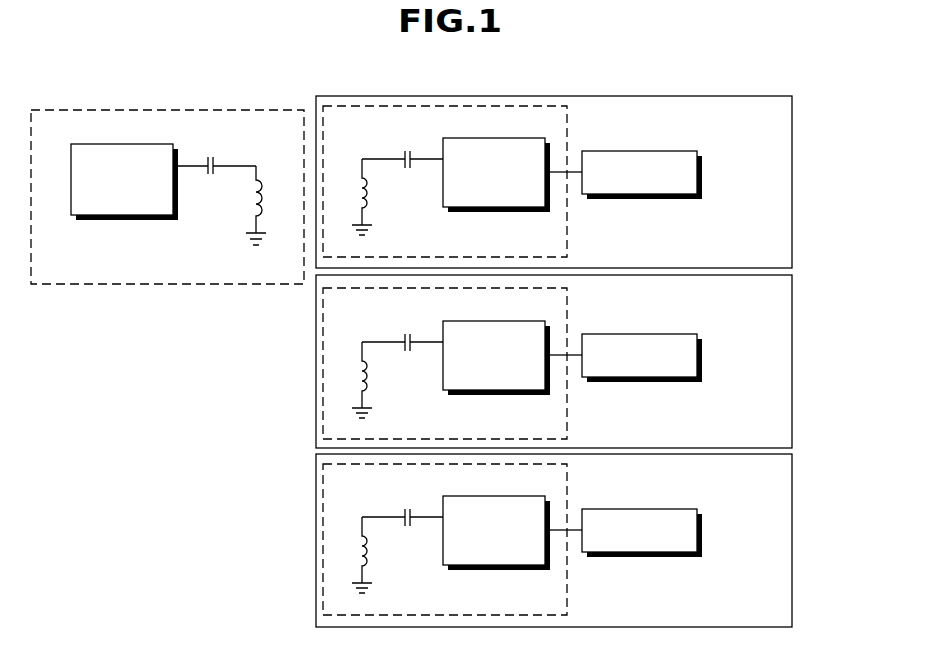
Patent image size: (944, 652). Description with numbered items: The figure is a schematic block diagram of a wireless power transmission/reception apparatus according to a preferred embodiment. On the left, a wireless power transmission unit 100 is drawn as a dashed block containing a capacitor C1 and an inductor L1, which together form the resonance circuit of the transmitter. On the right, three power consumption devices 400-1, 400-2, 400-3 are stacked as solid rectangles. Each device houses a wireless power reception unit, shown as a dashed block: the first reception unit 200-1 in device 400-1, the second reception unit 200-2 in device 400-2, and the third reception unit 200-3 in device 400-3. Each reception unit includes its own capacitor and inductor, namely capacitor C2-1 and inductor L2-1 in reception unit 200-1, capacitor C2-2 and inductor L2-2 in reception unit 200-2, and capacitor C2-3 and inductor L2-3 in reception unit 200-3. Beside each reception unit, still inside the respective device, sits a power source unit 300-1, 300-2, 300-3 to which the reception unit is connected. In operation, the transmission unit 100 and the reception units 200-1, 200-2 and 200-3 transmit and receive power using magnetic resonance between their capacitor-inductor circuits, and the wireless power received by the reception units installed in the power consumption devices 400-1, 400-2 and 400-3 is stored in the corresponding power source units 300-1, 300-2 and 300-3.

The wireless power transmission unit 100 is at (196, 108).
The capacitor C1 is at (209, 177).
The inductor L1 is at (249, 205).
The wireless power reception unit 200-1 is at (567, 122).
The wireless power reception unit 200-2 is at (567, 304).
The wireless power reception unit 200-3 is at (567, 480).
The capacitor C2-1 is at (412, 150).
The capacitor C2-2 is at (412, 333).
The capacitor C2-3 is at (412, 508).
The inductor L2-1 is at (376, 197).
The inductor L2-2 is at (376, 380).
The inductor L2-3 is at (376, 555).
The power source unit 300-1 is at (702, 172).
The power source unit 300-2 is at (702, 355).
The power source unit 300-3 is at (702, 530).
The power consumption device 400-1 is at (792, 198).
The power consumption device 400-2 is at (792, 381).
The power consumption device 400-3 is at (792, 557).